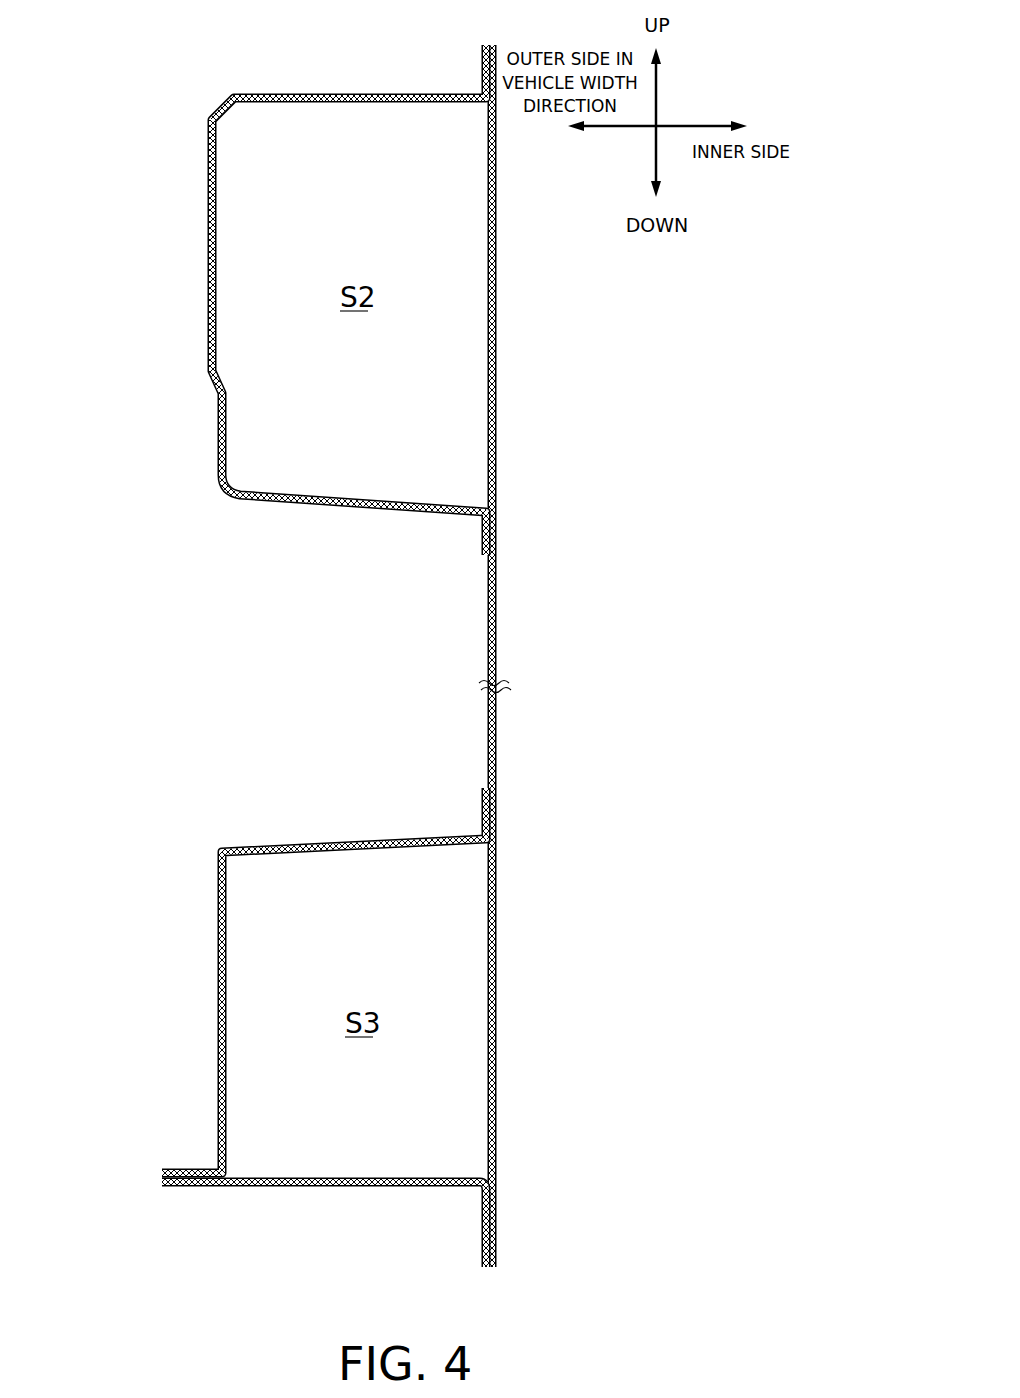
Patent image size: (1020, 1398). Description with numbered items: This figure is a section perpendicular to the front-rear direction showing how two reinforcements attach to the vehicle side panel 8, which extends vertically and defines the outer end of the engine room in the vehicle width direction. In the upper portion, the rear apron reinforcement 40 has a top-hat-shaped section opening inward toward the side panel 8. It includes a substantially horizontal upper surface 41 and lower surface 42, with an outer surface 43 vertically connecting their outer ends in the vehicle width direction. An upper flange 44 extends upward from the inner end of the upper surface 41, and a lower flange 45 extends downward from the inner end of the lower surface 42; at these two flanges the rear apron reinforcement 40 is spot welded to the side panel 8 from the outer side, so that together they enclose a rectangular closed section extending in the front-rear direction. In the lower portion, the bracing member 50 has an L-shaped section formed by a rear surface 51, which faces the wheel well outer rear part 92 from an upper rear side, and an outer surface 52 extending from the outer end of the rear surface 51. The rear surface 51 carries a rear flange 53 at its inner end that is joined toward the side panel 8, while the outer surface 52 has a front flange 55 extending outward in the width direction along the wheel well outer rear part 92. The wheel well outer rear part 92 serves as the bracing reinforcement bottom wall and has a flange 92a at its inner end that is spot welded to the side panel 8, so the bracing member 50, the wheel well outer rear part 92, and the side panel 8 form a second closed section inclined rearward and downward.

The side panel 8 is at (498, 277).
The rear apron reinforcement 40 is at (274, 306).
The upper surface 41 is at (352, 92).
The lower surface 42 is at (347, 504).
The outer surface 43 is at (208, 310).
The upper flange 44 is at (483, 60).
The lower flange 45 is at (482, 535).
The bracing member 50 is at (285, 935).
The rear surface 51 is at (380, 835).
The outer surface 52 is at (218, 1025).
The rear flange 53 is at (483, 802).
The front flange 55 is at (175, 1172).
The wheel well outer rear part 92 is at (324, 1238).
The flange 92a is at (483, 1220).